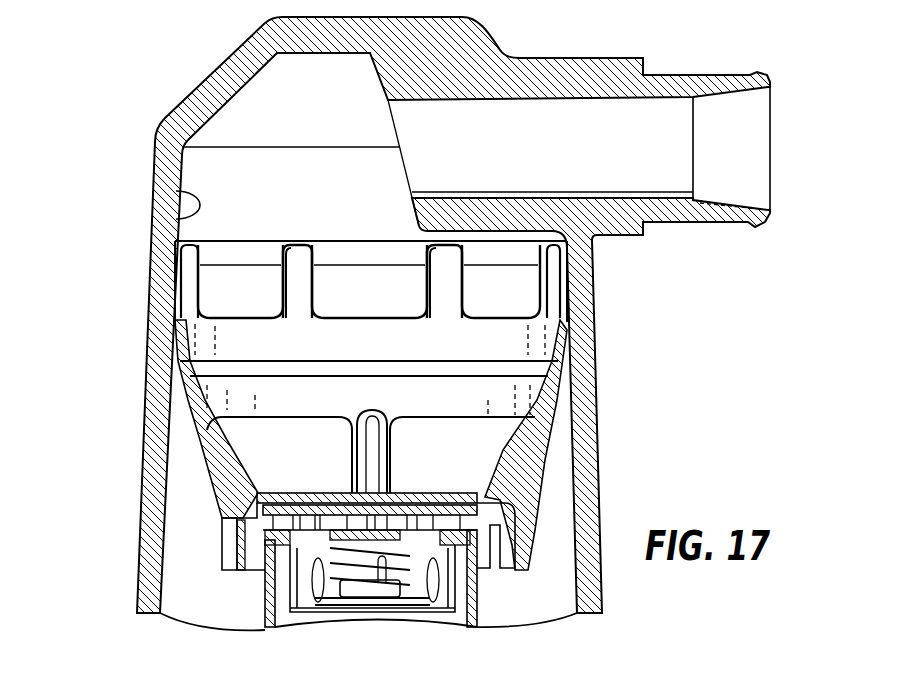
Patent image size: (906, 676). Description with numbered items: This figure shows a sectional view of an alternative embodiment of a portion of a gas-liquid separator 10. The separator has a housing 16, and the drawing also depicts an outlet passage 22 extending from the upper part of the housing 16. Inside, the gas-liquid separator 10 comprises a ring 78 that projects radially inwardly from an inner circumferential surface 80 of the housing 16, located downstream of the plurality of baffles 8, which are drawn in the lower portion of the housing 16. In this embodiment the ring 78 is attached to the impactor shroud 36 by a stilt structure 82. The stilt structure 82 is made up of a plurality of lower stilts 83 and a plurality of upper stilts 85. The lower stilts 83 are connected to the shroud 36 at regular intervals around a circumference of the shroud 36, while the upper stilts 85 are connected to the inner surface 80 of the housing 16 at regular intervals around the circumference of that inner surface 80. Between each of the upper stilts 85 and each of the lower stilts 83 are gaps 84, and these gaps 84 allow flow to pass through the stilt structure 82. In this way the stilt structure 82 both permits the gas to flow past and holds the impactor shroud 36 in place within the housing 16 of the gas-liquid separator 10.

The gas-liquid separator 10 is at (96, 104).
The mouthpiece 22 is at (712, 72).
The inner circumferential surface 80 is at (178, 193).
The upper stilts 85 is at (300, 243).
The gaps 84 is at (254, 304).
The lower stilts 83 is at (381, 448).
The ring 78 is at (183, 375).
The housing 16 is at (594, 347).
The stilt structure 82 is at (556, 436).
The impactor shroud 36 is at (527, 540).
The baffles 8 is at (490, 578).